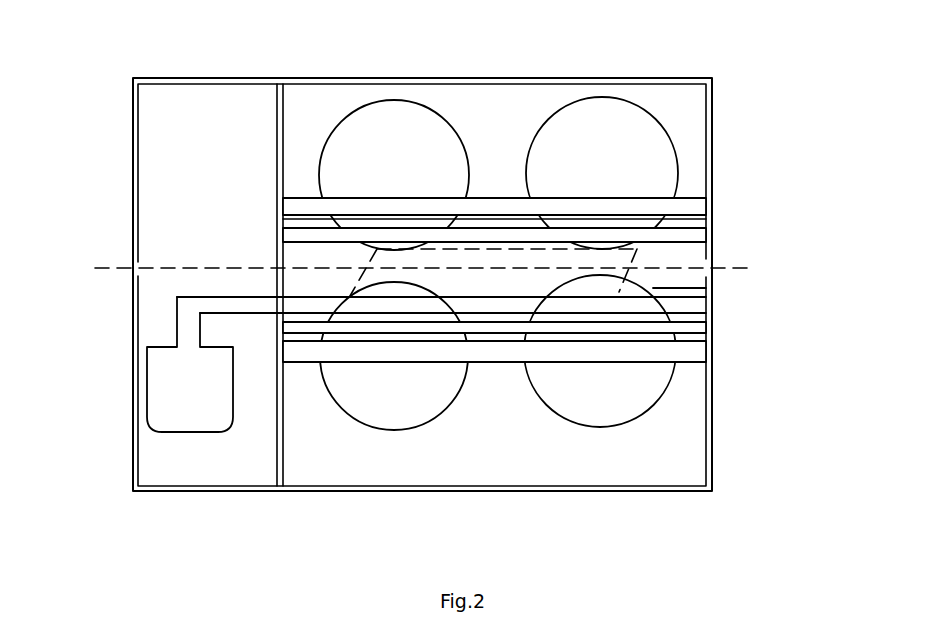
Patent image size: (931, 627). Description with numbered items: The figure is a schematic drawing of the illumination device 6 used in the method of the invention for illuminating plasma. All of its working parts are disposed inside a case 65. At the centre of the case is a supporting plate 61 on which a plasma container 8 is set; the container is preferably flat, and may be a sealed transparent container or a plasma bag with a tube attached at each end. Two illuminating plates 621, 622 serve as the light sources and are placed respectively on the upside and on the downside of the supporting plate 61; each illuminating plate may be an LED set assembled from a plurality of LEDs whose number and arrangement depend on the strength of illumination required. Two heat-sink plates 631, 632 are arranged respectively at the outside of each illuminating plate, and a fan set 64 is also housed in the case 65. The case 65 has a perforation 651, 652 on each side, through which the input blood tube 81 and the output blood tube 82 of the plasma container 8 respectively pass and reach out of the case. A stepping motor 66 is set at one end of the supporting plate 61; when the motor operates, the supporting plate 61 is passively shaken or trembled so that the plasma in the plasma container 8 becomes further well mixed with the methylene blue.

The illumination device 6 is at (440, 68).
The fan set 64 is at (598, 148).
The heat-sink plate 631 is at (622, 205).
The illuminating plate 621 is at (677, 232).
The plasma container 8 is at (493, 272).
The output blood tube 82 is at (675, 263).
The supporting plate 61 is at (692, 297).
The illuminating plate 622 is at (652, 327).
The heat-sink plate 632 is at (653, 354).
The case 65 is at (708, 408).
The perforation 651 is at (708, 265).
The perforation 652 is at (133, 268).
The input blood tube 81 is at (188, 270).
The stepping motor 66 is at (175, 385).